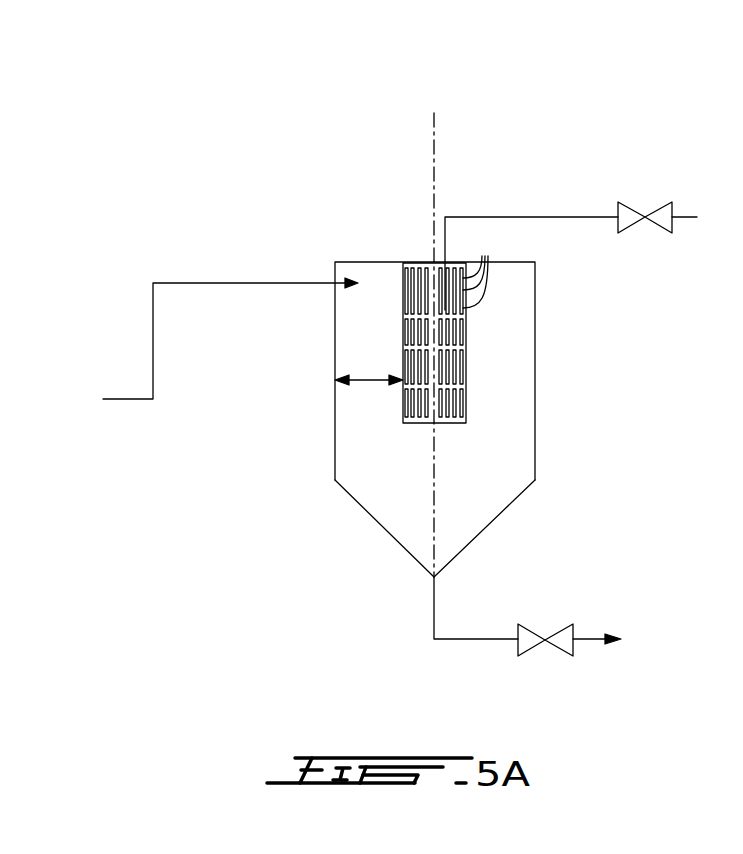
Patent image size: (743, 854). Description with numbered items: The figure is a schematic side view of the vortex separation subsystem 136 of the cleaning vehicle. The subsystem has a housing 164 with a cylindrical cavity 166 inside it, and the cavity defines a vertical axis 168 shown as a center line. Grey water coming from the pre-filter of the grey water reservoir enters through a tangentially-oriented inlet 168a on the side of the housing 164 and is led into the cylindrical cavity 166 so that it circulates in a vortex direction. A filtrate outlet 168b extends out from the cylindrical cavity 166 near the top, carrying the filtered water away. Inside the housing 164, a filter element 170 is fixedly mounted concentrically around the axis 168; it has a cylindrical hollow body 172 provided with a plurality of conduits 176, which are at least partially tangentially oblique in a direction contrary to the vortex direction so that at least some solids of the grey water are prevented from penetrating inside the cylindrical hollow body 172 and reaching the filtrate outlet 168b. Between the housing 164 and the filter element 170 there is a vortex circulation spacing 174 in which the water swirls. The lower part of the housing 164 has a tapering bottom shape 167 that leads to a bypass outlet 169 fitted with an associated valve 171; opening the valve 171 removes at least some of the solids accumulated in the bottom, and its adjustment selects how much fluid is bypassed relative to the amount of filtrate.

The vortex separation subsystem 136 is at (268, 221).
The housing 164 is at (535, 362).
The cylindrical cavity 166 is at (508, 333).
The tapering bottom shape 167 is at (486, 529).
The axis 168 is at (437, 130).
The tangentially-oriented inlet 168a is at (307, 282).
The filtrate outlet 168b is at (540, 217).
The bypass outlet 169 is at (483, 641).
The filter element 170 is at (480, 414).
The valve 171 is at (567, 643).
The cylindrical hollow body 172 is at (466, 392).
The vortex circulation spacing 174 is at (368, 384).
The conduits 176 is at (484, 268).